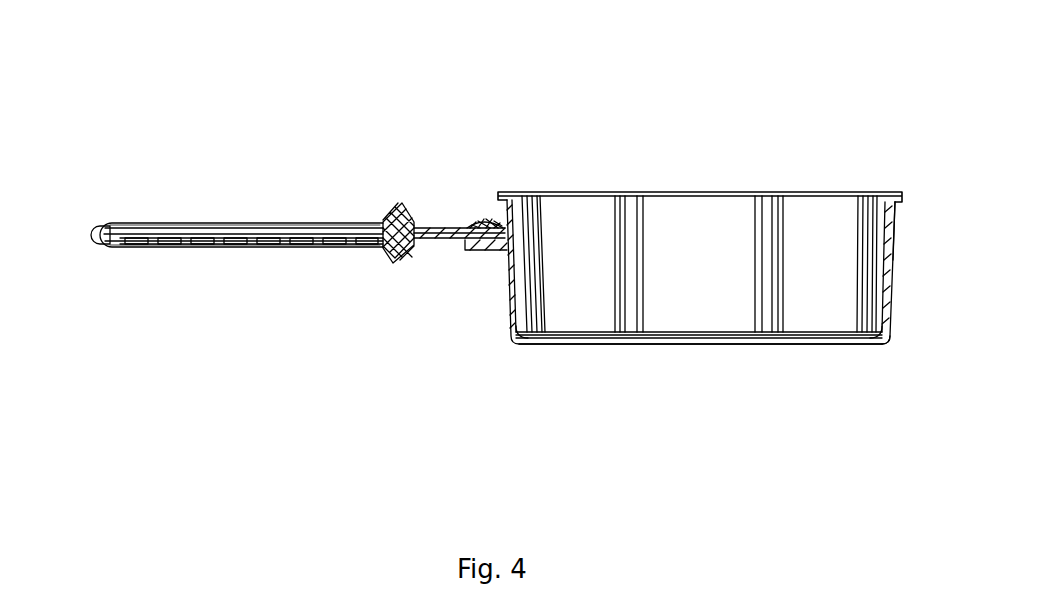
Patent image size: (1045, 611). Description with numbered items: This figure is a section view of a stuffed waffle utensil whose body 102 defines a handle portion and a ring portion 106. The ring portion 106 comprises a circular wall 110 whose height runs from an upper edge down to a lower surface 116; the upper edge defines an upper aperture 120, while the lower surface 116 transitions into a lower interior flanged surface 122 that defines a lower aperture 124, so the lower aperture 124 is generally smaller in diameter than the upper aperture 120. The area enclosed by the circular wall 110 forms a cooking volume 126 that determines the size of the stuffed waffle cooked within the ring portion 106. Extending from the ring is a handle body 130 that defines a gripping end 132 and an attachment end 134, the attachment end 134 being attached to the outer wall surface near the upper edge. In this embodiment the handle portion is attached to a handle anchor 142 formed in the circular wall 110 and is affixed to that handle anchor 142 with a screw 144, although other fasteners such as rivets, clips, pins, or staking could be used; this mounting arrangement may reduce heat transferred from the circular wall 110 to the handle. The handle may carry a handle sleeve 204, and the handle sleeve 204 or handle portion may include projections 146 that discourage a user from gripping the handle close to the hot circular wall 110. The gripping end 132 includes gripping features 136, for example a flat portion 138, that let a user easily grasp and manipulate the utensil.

The body 102 is at (680, 253).
The ring portion 106 is at (899, 229).
The circular wall 110 is at (892, 328).
The lower surface 116 is at (503, 346).
The upper aperture 120 is at (677, 185).
The lower interior flanged surface 122 is at (545, 330).
The lower aperture 124 is at (731, 348).
The cooking volume 126 is at (713, 251).
The handle body 130 is at (278, 216).
The gripping end 132 is at (95, 258).
The attachment end 134 is at (468, 228).
The gripping features 136 is at (365, 256).
The flat portion 138 is at (241, 256).
The handle anchor 142 is at (471, 260).
The screw 144 is at (484, 222).
The projections 146 is at (404, 205).
The handle sleeve 204 is at (195, 215).